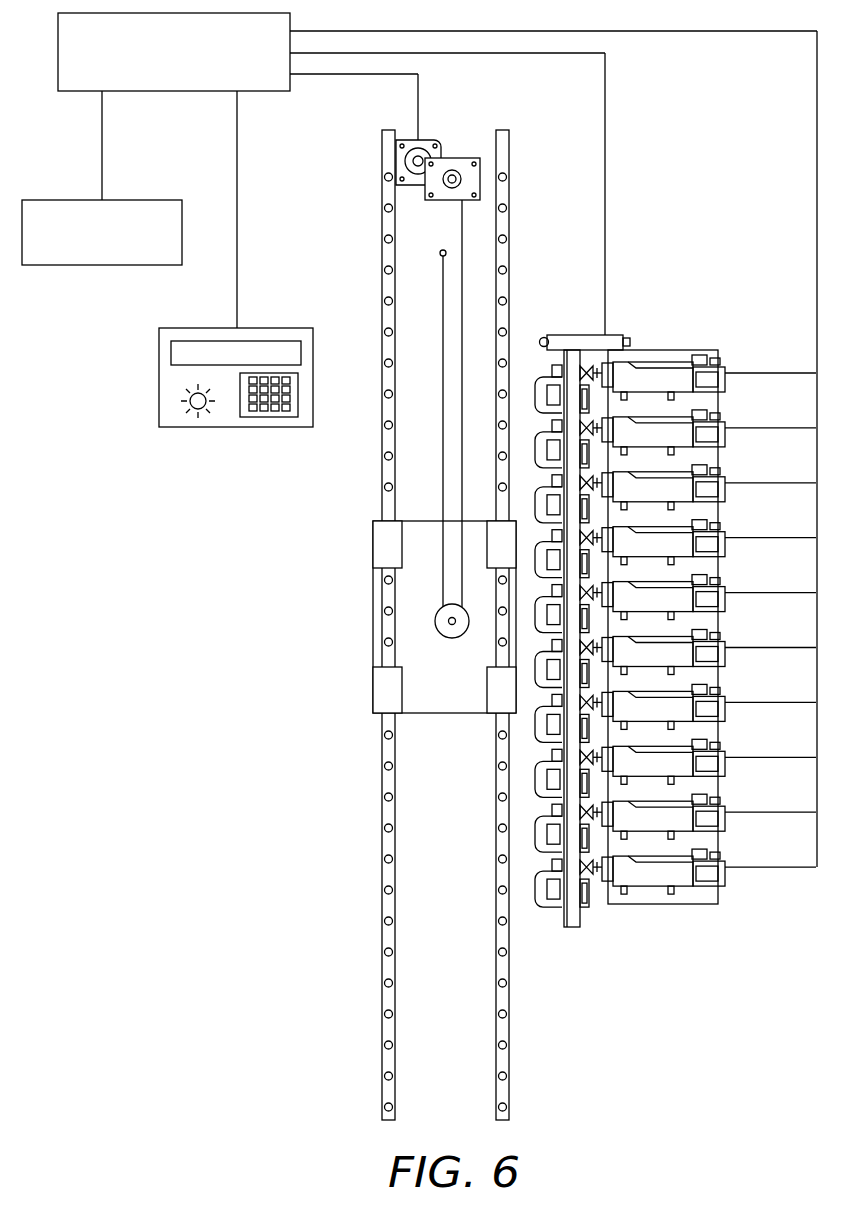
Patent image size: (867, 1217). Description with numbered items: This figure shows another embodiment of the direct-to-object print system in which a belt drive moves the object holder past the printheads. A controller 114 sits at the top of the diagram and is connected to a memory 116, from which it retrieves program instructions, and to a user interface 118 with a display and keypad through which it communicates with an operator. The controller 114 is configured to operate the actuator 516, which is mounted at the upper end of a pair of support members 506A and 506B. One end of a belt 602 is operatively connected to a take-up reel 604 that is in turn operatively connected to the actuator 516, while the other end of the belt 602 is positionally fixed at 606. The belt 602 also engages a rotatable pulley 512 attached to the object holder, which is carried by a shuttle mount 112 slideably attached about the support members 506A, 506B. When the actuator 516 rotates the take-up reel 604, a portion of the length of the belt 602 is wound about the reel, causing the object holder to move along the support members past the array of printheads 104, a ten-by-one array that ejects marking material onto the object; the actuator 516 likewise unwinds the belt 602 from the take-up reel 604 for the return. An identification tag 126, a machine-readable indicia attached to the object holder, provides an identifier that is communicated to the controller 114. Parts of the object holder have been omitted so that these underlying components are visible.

The controller 114 is at (260, 91).
The memory 116 is at (102, 265).
The user interface 118 is at (237, 427).
The actuator 516 is at (428, 140).
The belt 602 is at (463, 261).
The take-up reel 604 is at (452, 200).
The fixed end of belt 606 is at (440, 256).
The rotatable pulley 512 is at (436, 614).
The shuttle mount 112 is at (432, 713).
The support member 506A is at (382, 1058).
The support member 506B is at (509, 1058).
The identification tag 126 is at (600, 350).
The array of printheads 104 is at (694, 360).